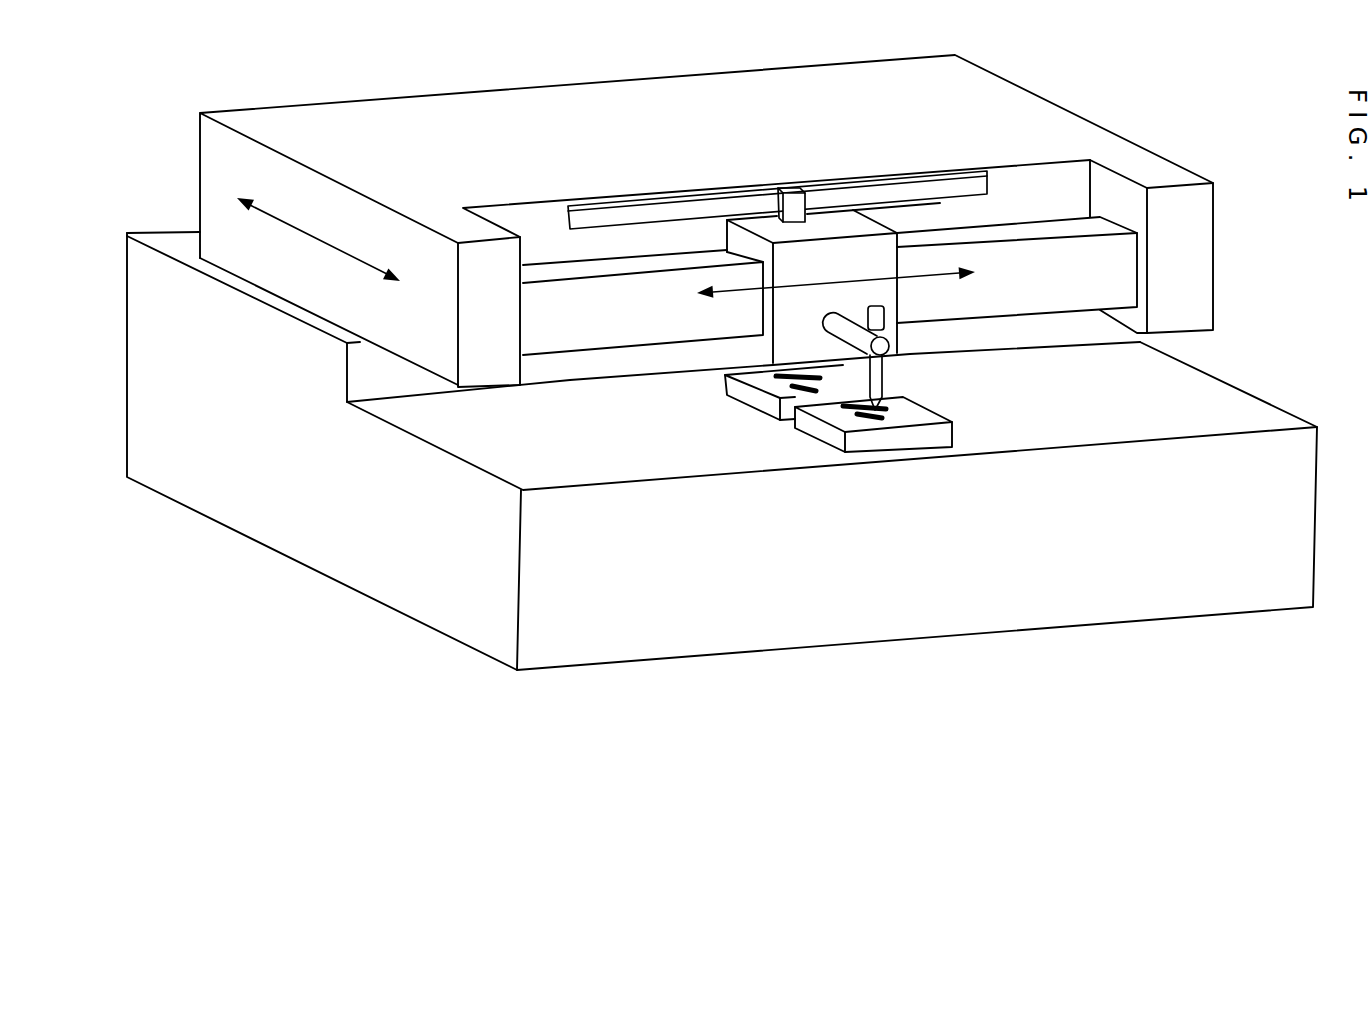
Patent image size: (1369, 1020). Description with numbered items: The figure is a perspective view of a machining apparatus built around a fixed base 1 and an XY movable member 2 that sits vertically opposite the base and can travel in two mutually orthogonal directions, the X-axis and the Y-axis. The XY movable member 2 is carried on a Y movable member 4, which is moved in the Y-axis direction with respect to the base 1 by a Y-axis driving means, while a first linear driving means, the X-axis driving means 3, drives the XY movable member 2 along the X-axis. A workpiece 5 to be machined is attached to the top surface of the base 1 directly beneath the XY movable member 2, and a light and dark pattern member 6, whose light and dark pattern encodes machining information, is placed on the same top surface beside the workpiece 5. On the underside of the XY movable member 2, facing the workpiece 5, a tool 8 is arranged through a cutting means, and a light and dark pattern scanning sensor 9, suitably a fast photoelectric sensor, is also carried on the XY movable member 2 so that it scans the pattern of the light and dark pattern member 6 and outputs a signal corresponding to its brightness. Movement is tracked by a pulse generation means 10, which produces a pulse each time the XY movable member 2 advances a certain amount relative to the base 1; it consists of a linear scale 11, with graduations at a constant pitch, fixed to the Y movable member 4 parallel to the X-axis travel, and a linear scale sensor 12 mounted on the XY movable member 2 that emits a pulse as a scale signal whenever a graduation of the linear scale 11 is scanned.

The base 1 is at (393, 543).
The XY movable member 2 is at (840, 265).
The X-axis driving means 3 is at (1087, 263).
The Y movable member 4 is at (273, 255).
The workpiece 5 is at (745, 400).
The light and dark pattern member 6 is at (867, 435).
The tool 8 is at (815, 365).
The light and dark pattern scanning sensor 9 is at (850, 371).
The pulse generation means 10 is at (797, 173).
The linear scale 11 is at (642, 212).
The linear scale sensor 12 is at (822, 190).